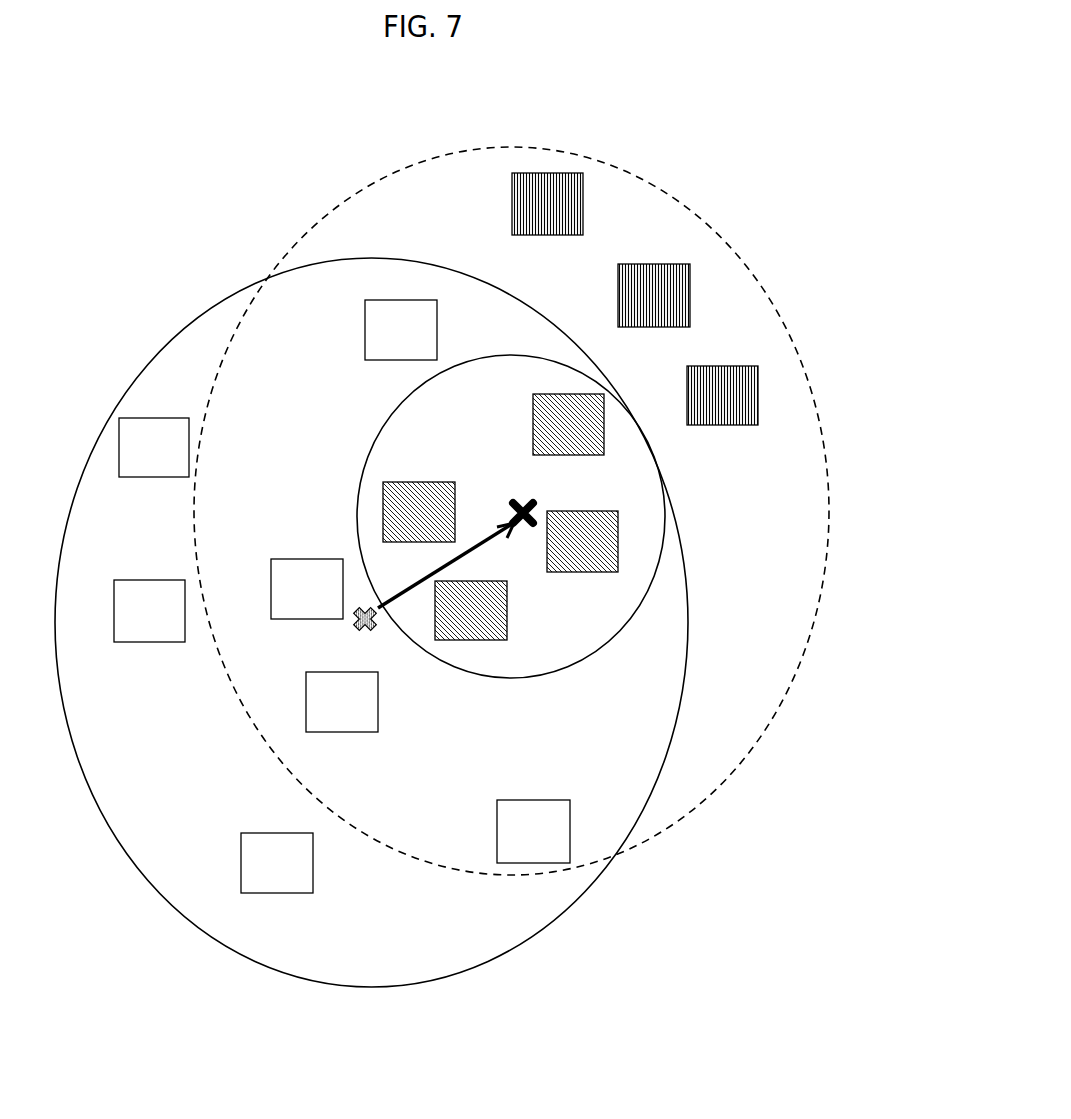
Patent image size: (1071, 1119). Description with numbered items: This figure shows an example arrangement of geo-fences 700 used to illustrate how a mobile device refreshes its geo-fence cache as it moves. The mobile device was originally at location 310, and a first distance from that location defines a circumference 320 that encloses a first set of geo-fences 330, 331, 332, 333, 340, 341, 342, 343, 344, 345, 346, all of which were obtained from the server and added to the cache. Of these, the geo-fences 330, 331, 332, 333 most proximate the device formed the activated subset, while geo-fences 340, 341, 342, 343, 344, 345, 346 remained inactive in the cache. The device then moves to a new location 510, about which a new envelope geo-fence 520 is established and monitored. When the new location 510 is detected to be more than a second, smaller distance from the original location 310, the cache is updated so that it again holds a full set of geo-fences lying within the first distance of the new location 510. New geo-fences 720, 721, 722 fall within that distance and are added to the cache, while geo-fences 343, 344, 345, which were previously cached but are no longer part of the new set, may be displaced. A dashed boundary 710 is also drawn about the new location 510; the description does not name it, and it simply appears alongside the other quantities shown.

The arrangement of geo-fences 700 is at (675, 125).
The search area boundary 710 is at (792, 338).
The circumference 320 is at (688, 607).
The new envelope geo-fence 520 is at (600, 653).
The new location 510 is at (515, 500).
The location 310 is at (380, 630).
The geo-fence 330 is at (471, 610).
The geo-fence 331 is at (419, 512).
The geo-fence 332 is at (307, 589).
The geo-fence 333 is at (342, 702).
The geo-fence 340 is at (582, 541).
The geo-fence 341 is at (568, 424).
The geo-fence 342 is at (401, 330).
The geo-fence 343 is at (154, 447).
The geo-fence 344 is at (149, 611).
The geo-fence 345 is at (277, 863).
The geo-fence 346 is at (533, 831).
The new geo-fence 720 is at (547, 204).
The new geo-fence 721 is at (654, 295).
The new geo-fence 722 is at (722, 395).